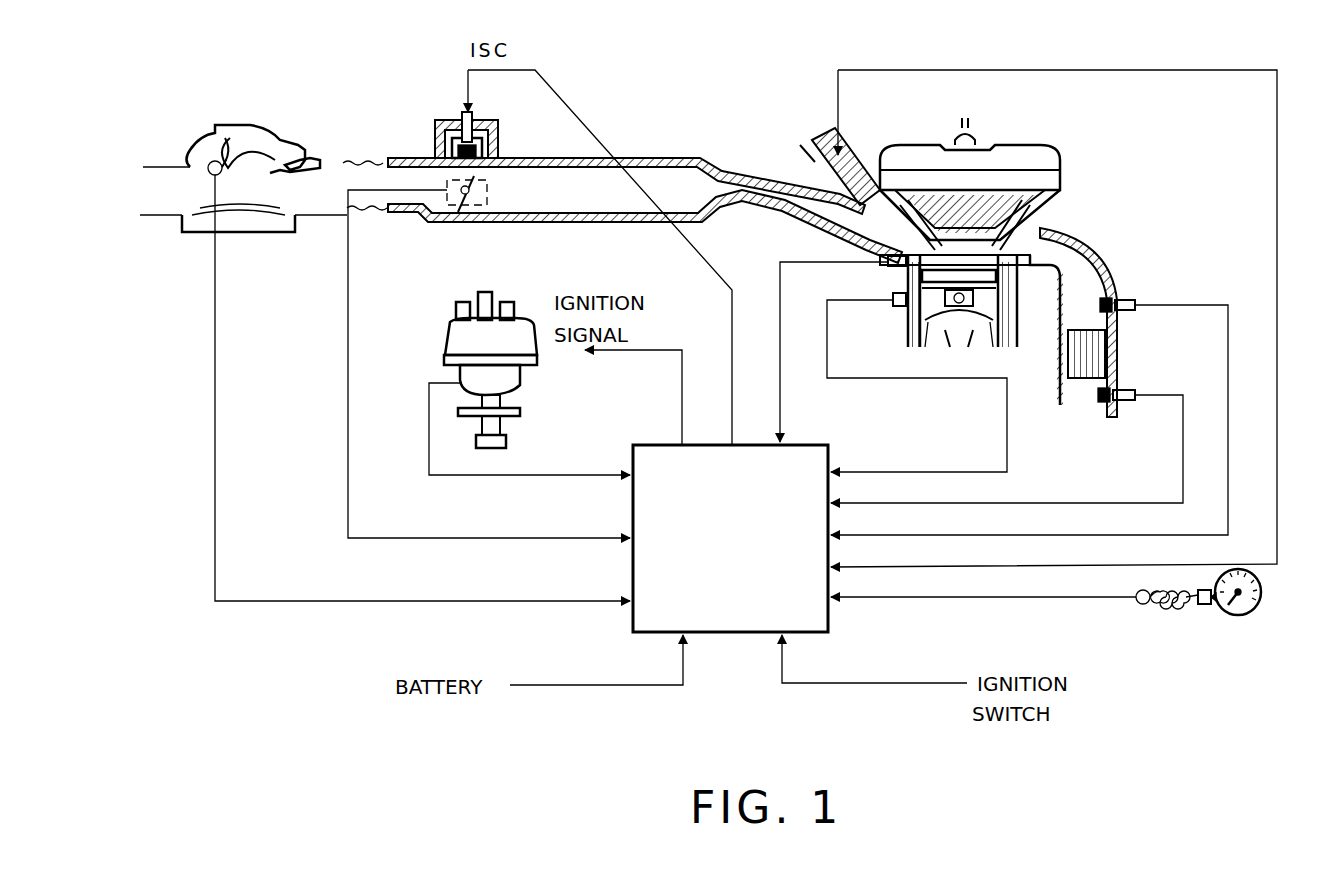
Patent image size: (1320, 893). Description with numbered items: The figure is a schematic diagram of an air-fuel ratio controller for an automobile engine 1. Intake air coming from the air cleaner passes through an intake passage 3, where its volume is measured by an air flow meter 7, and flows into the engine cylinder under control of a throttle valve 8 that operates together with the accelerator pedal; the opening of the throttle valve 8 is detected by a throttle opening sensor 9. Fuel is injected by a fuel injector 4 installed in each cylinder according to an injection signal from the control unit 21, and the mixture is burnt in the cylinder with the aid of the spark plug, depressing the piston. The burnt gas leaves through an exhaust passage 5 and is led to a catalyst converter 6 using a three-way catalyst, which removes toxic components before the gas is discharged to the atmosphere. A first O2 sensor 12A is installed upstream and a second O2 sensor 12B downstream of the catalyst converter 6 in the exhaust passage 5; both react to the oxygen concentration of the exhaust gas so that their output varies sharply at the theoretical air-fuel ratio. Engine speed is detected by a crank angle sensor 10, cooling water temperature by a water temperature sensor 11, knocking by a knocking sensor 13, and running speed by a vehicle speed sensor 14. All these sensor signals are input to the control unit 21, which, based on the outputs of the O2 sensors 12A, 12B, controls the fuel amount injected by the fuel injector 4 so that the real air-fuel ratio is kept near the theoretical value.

The engine 1 is at (1030, 330).
The intake passage 3 is at (690, 157).
The fuel injector 4 is at (850, 165).
The exhaust passage 5 is at (1078, 240).
The catalyst converter 6 is at (1092, 355).
The air flow meter 7 is at (265, 158).
The throttle valve 8 is at (462, 208).
The throttle opening sensor 9 is at (480, 215).
The crank angle sensor 10 is at (470, 388).
The water temperature sensor 11 is at (895, 267).
The first O2 sensor 12A is at (1118, 297).
The second O2 sensor 12B is at (1132, 392).
The knocking sensor 13 is at (890, 308).
The vehicle speed sensor 14 is at (1175, 605).
The control unit 21 is at (828, 635).